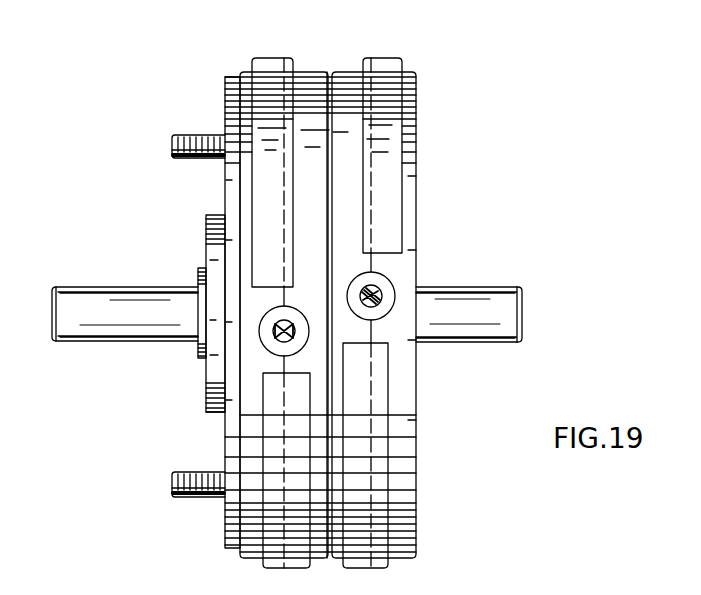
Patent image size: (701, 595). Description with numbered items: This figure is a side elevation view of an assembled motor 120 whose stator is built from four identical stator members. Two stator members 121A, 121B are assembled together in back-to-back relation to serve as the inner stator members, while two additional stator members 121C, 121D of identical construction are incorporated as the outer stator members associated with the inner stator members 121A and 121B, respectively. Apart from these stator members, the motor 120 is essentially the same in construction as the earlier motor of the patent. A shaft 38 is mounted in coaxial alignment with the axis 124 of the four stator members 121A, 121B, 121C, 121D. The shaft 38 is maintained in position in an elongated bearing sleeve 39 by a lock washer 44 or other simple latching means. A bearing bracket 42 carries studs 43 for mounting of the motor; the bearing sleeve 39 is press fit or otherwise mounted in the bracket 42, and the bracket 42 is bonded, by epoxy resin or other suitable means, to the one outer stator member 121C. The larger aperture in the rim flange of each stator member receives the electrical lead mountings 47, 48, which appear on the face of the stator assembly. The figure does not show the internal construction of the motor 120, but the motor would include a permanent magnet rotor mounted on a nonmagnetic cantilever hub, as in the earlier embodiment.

The motor 120 is at (417, 145).
The stator member 121A is at (310, 70).
The stator member 121B is at (352, 70).
The stator member 121C is at (244, 70).
The stator member 121D is at (402, 272).
The bearing bracket 42 is at (229, 187).
The studs 43 is at (172, 150).
The lock washer 44 is at (198, 270).
The bearing sleeve 39 is at (205, 407).
The electrical lead mounting 47 is at (265, 340).
The electrical lead mounting 48 is at (378, 308).
The axis 124 is at (52, 330).
The shaft 38 is at (137, 341).